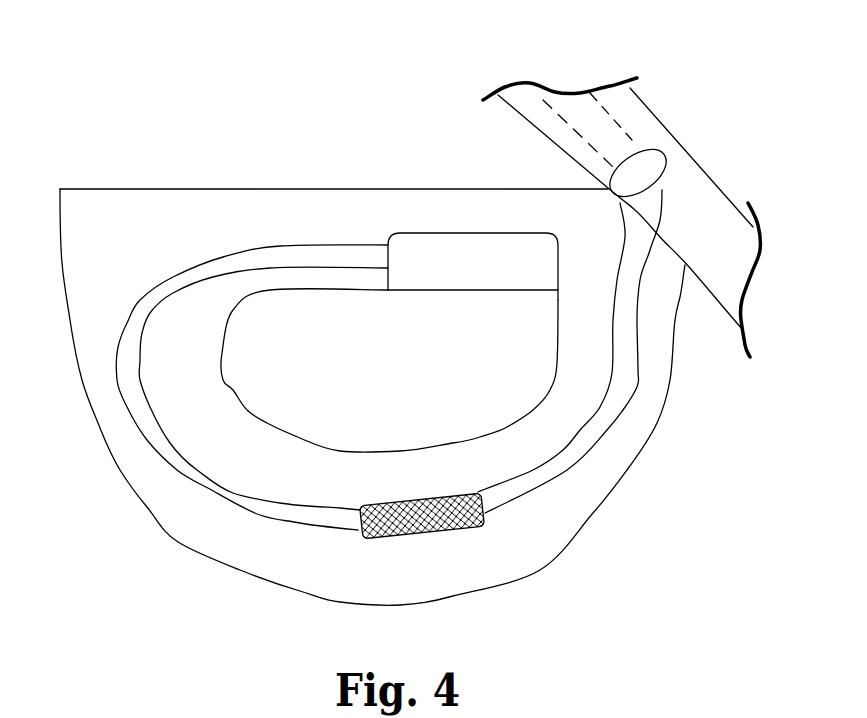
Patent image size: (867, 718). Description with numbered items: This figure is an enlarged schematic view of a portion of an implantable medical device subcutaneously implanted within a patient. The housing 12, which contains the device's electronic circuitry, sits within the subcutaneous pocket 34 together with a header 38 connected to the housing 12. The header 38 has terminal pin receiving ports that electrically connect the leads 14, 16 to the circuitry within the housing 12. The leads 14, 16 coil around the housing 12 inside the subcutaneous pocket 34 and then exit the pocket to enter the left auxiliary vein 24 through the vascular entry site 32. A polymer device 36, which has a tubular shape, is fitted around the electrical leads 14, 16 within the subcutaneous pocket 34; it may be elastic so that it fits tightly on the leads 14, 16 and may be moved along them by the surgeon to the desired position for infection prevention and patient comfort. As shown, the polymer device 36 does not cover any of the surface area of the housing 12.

The housing 12 is at (275, 428).
The lead 14 is at (303, 245).
The lead 16 is at (190, 284).
The left auxiliary vein 24 is at (727, 194).
The vascular entry site 32 is at (646, 152).
The subcutaneous pocket 34 is at (618, 483).
The polymer device 36 is at (463, 532).
The header 38 is at (462, 233).